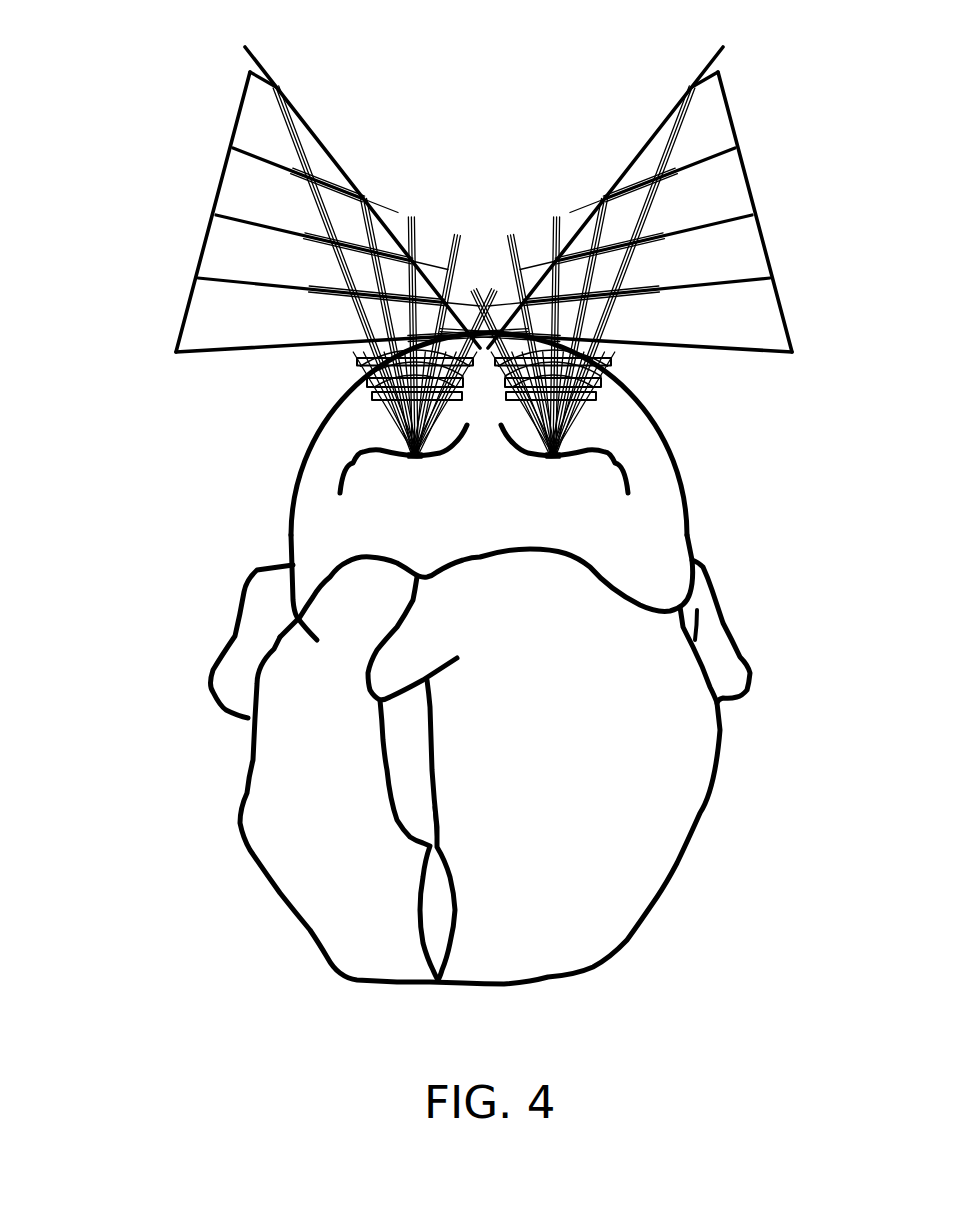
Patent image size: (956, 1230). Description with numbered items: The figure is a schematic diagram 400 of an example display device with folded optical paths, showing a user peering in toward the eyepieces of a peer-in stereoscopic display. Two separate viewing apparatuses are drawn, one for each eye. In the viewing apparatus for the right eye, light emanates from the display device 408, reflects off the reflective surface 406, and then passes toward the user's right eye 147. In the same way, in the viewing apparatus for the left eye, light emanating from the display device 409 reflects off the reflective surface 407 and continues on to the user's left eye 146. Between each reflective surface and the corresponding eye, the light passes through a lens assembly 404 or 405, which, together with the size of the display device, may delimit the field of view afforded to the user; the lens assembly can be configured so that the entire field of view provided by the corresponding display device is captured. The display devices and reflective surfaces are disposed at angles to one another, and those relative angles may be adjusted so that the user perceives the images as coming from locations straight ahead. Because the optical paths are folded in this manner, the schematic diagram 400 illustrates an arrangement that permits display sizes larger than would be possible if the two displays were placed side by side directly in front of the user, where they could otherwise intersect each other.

The schematic diagram 400 is at (131, 492).
The lens assembly 404 is at (605, 412).
The lens assembly 405 is at (363, 412).
The reflective surface 406 is at (630, 158).
The reflective surface 407 is at (400, 233).
The display device 408 is at (753, 202).
The display device 409 is at (217, 193).
The left eye 146 is at (348, 470).
The right eye 147 is at (620, 470).